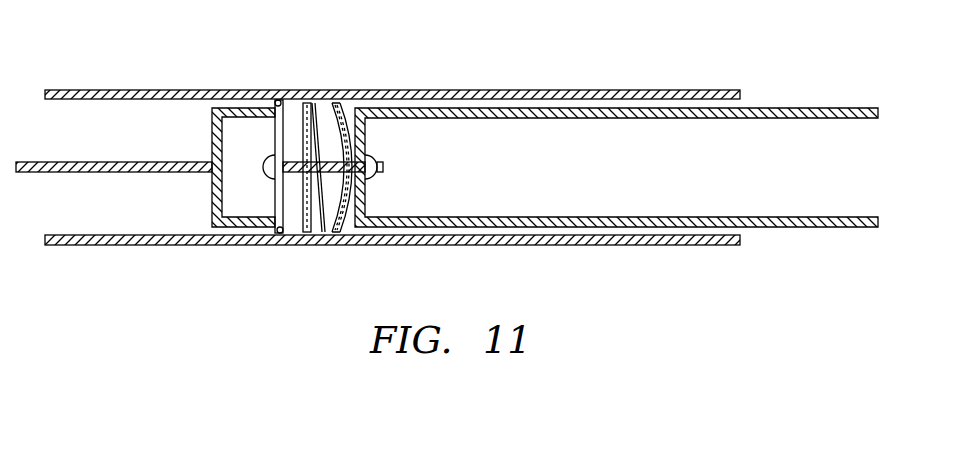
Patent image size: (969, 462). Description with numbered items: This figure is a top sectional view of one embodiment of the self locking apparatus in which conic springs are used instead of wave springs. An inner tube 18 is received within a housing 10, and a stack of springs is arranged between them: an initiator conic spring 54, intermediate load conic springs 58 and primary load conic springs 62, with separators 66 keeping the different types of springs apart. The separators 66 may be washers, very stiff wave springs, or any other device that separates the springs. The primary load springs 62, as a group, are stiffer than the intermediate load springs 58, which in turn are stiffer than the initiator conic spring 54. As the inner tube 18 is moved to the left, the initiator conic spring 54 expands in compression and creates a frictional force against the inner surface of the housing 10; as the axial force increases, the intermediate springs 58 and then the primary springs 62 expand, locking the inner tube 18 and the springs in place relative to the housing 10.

The housing 10 is at (697, 245).
The inner tube 18 is at (760, 119).
The initiator conic spring 54 is at (300, 152).
The intermediate load conic springs 58 is at (316, 103).
The primary load conic springs 62 is at (341, 103).
The separators 66 is at (322, 226).